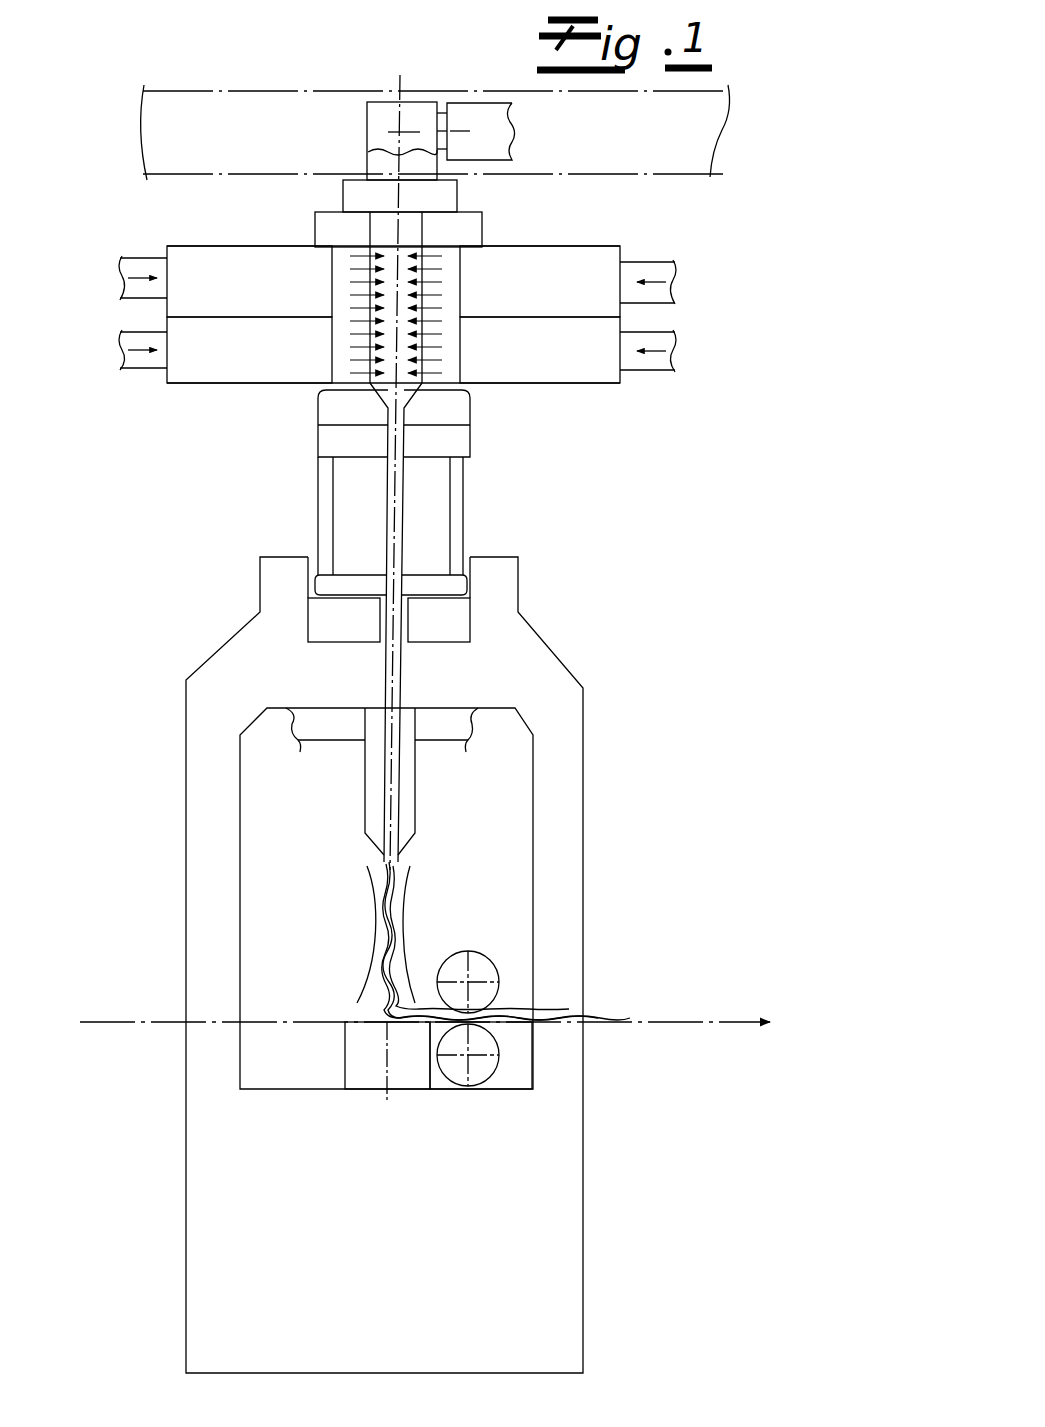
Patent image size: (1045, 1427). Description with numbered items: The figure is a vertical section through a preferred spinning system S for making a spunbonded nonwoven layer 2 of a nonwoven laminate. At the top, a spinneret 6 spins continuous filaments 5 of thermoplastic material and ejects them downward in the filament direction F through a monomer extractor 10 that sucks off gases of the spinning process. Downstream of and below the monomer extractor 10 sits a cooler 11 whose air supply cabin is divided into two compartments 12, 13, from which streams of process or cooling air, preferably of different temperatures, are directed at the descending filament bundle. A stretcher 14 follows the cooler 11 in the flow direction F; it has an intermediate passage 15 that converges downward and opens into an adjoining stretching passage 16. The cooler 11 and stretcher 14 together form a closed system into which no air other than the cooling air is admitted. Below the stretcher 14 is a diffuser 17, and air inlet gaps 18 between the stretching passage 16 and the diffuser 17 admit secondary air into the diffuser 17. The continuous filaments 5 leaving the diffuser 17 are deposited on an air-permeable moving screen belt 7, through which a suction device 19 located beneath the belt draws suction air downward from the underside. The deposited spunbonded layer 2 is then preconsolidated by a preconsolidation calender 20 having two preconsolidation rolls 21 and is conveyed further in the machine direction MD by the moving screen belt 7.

The first spunbonded nonwoven layer 2 is at (510, 1012).
The continuous filaments 5 is at (382, 954).
The spinneret 6 is at (383, 114).
The moving screen belt 7 is at (297, 1023).
The monomer extractor 10 is at (325, 234).
The cooler 11 is at (438, 289).
The compartment 12 is at (262, 296).
The compartment 13 is at (262, 364).
The stretcher 14 is at (415, 681).
The intermediate passage 15 is at (394, 546).
The stretching passage 16 is at (392, 768).
The diffuser 17 is at (353, 900).
The air inlet gaps 18 is at (372, 853).
The suction device 19 is at (372, 1098).
The preconsolidation calender 20 is at (534, 999).
The preconsolidation rolls 21 is at (476, 953).
The spinning system S is at (655, 558).
The filament direction F is at (283, 510).
The machine direction MD is at (786, 1049).